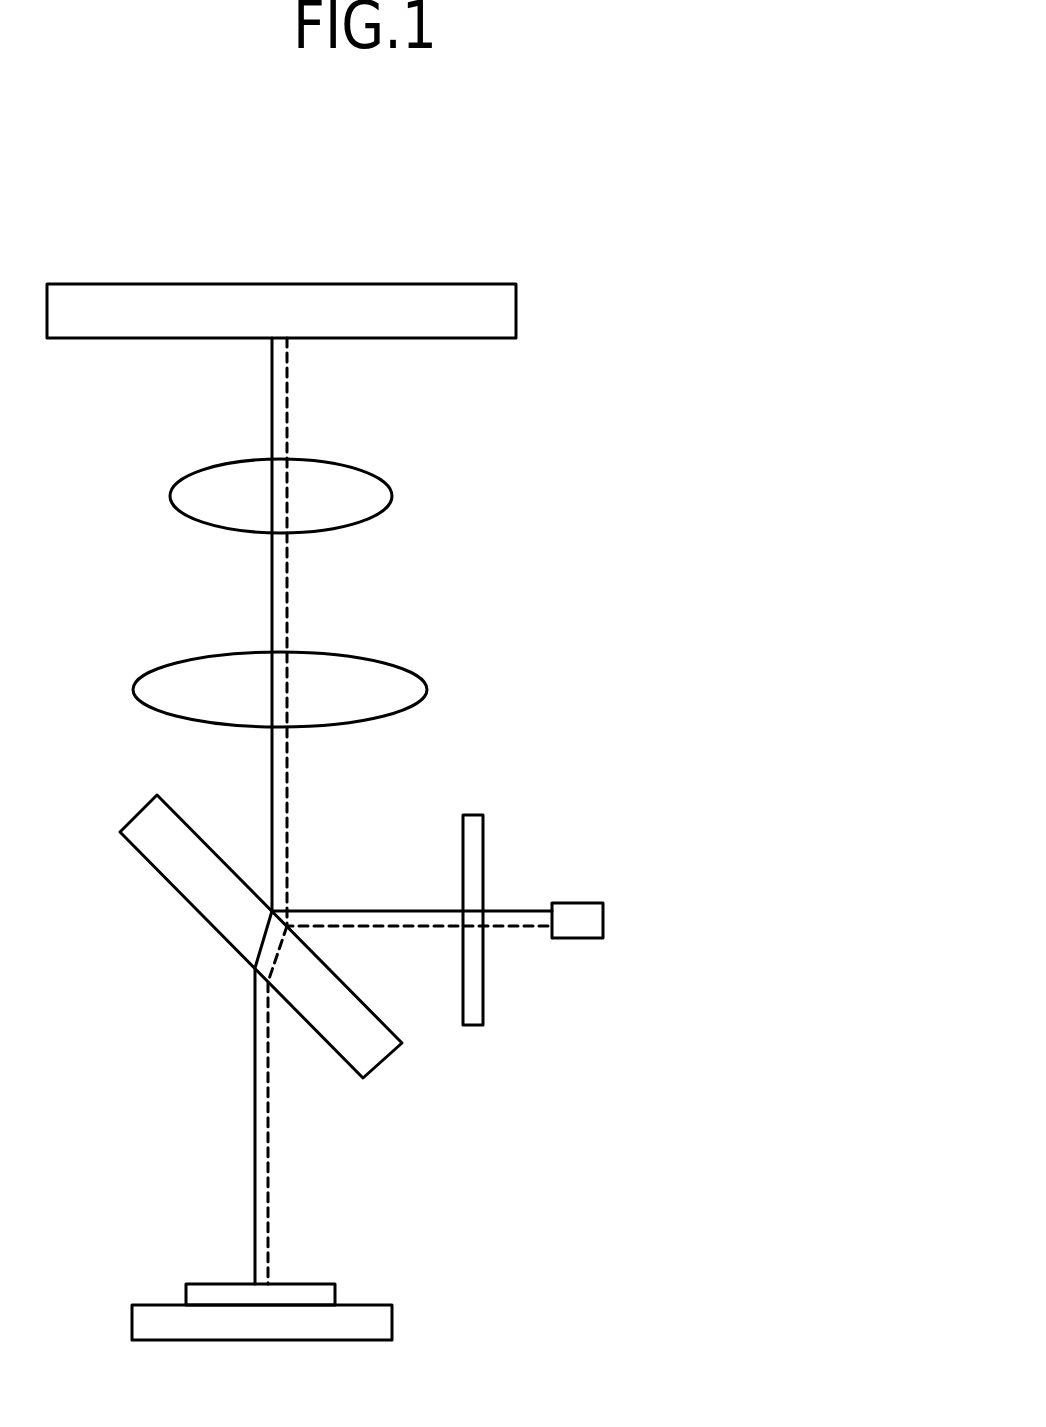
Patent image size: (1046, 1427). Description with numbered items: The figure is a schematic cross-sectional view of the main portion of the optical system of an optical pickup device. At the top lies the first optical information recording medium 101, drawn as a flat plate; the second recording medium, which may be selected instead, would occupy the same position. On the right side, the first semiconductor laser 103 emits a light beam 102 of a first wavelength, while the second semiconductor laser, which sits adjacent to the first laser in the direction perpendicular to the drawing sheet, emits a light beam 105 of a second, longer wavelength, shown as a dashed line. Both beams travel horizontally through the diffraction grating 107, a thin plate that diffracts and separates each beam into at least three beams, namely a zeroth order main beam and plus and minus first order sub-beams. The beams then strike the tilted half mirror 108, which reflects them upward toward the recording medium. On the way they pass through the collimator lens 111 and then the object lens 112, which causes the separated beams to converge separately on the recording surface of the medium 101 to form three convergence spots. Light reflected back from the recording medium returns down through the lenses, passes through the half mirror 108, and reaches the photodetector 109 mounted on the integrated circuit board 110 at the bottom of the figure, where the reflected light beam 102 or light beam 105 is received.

The first optical information recording medium 101 is at (516, 303).
The light beam having a first wavelength 102 is at (272, 603).
The light beam having a second wavelength 105 is at (287, 587).
The object lens 112 is at (392, 496).
The collimator lens 111 is at (427, 688).
The half mirror 108 is at (167, 881).
The diffraction grating 107 is at (473, 1025).
The first semiconductor laser 103 is at (603, 915).
The photodetector 109 is at (335, 1293).
The integrated circuit board 110 is at (392, 1322).